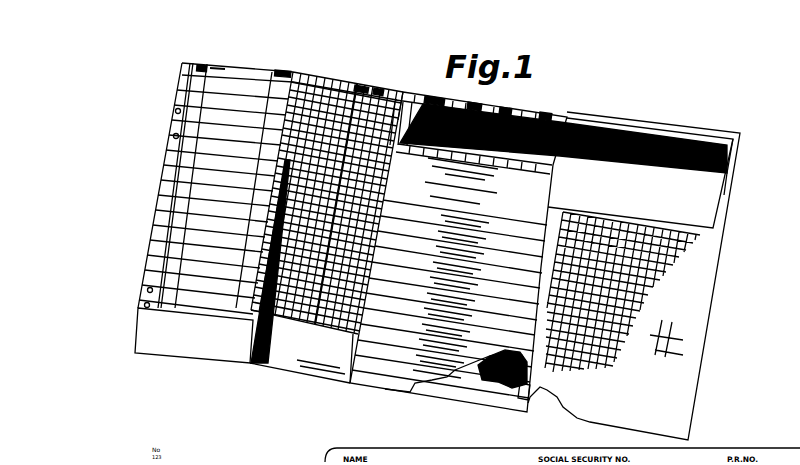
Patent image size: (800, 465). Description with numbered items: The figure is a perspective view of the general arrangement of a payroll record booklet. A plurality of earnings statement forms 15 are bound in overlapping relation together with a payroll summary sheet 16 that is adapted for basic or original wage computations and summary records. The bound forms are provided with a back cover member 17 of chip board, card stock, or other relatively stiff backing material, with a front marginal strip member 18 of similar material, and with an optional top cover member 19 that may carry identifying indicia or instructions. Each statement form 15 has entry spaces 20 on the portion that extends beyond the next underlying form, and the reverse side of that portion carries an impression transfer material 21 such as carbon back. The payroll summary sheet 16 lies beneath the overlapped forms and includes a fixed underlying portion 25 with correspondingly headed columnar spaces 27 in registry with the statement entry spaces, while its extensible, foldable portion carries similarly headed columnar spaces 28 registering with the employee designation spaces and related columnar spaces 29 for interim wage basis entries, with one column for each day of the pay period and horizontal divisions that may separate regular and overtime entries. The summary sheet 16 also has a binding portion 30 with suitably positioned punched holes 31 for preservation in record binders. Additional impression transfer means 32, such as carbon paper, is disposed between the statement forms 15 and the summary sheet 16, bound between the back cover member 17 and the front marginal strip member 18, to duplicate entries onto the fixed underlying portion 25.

The earnings statement forms 15 is at (542, 258).
The payroll summary sheet 16 is at (292, 402).
The back cover member 17 is at (490, 398).
The front marginal strip member 18 is at (530, 406).
The top cover member 19 is at (646, 276).
The entry spaces 20 is at (550, 162).
The impression transfer material 21 is at (727, 172).
The fixed underlying portion 25 is at (424, 97).
The columnar spaces 27 is at (541, 239).
The columnar spaces 28 is at (207, 177).
The columnar spaces for interim wage basis entries 29 is at (330, 95).
The binding portion 30 is at (167, 182).
The punched holes 31 is at (173, 135).
The impression transfer means 32 is at (542, 122).